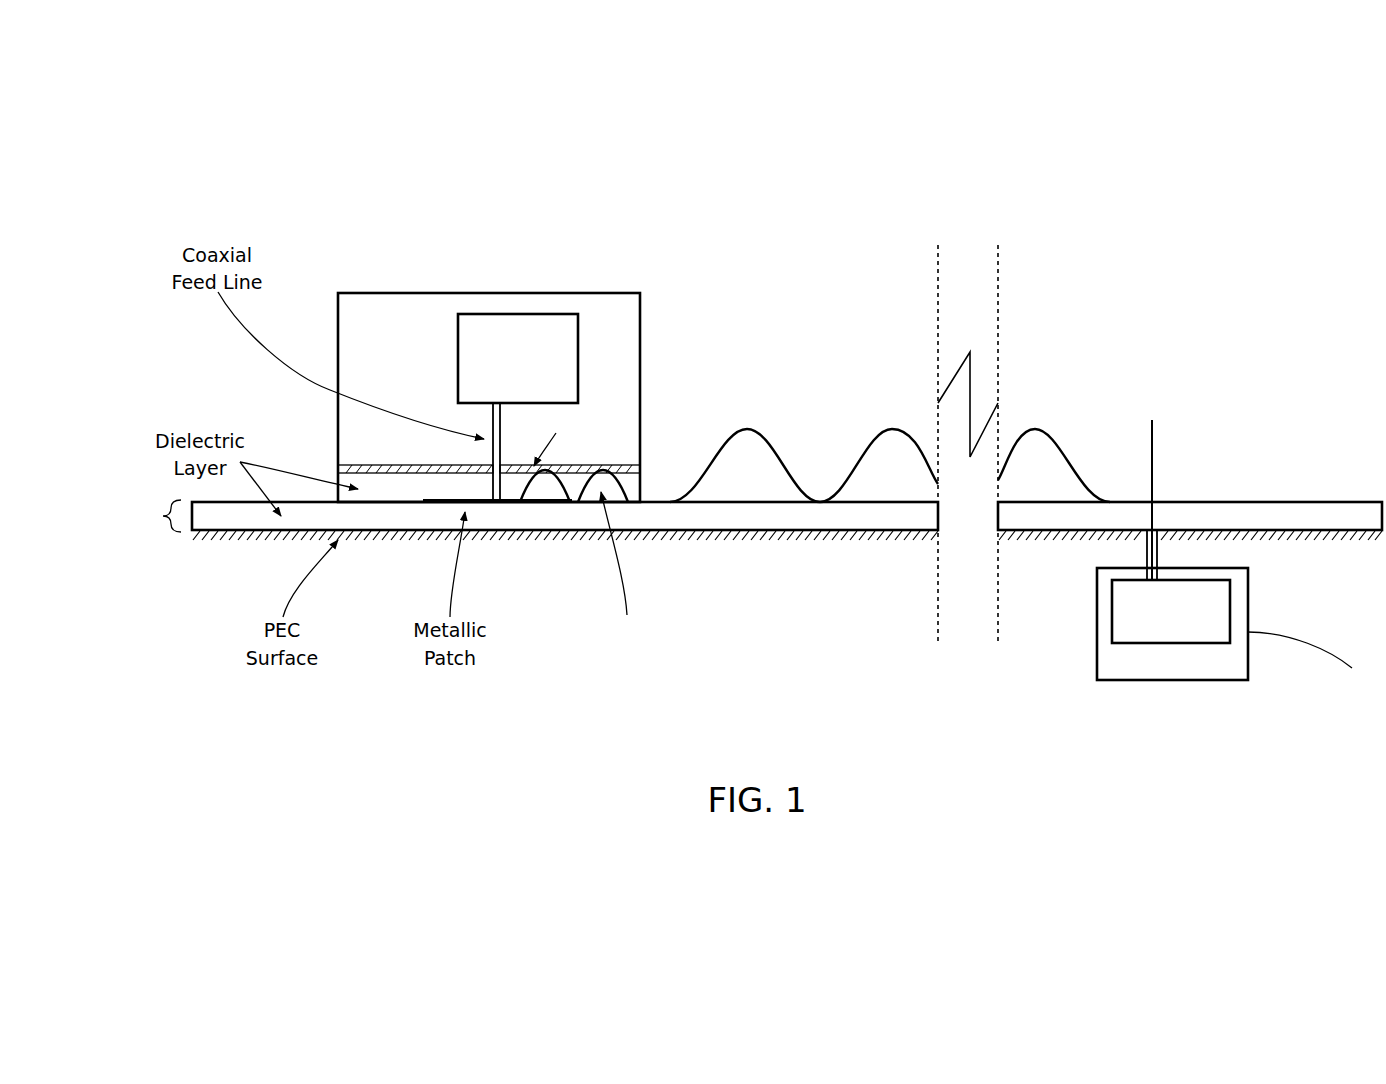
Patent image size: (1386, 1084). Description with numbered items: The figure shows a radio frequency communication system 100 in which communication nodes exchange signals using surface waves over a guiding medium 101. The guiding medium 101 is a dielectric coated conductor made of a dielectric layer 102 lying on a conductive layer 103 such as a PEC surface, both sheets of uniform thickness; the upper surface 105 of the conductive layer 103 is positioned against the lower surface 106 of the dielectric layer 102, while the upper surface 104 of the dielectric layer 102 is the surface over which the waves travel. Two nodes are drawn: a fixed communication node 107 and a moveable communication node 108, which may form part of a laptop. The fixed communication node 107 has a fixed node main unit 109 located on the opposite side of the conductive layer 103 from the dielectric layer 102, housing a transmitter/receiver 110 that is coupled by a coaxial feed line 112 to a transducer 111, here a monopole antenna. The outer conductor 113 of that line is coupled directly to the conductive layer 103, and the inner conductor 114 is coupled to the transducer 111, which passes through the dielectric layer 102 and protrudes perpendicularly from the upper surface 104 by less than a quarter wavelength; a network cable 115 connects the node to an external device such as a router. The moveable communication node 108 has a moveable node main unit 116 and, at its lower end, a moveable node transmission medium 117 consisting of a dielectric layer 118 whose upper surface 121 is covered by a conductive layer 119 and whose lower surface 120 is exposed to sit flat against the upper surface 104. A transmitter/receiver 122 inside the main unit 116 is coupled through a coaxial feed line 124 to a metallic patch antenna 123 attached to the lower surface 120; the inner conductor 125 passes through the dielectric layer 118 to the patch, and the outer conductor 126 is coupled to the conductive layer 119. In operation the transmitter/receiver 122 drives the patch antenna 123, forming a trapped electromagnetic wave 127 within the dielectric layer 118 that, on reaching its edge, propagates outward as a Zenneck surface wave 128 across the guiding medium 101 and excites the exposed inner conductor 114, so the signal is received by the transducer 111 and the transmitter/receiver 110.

The radio frequency communication system 100 is at (716, 243).
The guiding medium 101 is at (180, 533).
The dielectric layer 102 is at (905, 512).
The conductive layer 103 is at (782, 535).
The upper surface 104 is at (191, 502).
The upper surface 105 is at (367, 522).
The lower surface 106 is at (248, 538).
The fixed communication node 107 is at (1135, 680).
The moveable communication node 108 is at (470, 293).
The fixed node main unit 109 is at (1097, 660).
The transmitter/receiver 110 is at (1210, 643).
The transducer 111 is at (1153, 426).
The coaxial feed line 112 is at (1158, 575).
The outer conductor 113 is at (1146, 548).
The inner conductor 114 is at (1157, 520).
The network cable 115 is at (1309, 626).
The moveable node main unit 116 is at (533, 293).
The moveable node transmission medium 117 is at (652, 487).
The dielectric layer 118 is at (368, 473).
The conductive layer 119 is at (641, 445).
The lower surface 120 is at (416, 505).
The upper surface 121 is at (343, 515).
The transmitter/receiver 122 is at (553, 314).
The metallic patch antenna 123 is at (500, 505).
The coaxial feed line 124 is at (481, 453).
The inner conductor 125 is at (492, 415).
The outer conductor 126 is at (492, 428).
The trapped electromagnetic wave 127 is at (620, 496).
The Zenneck surface wave 128 is at (750, 430).